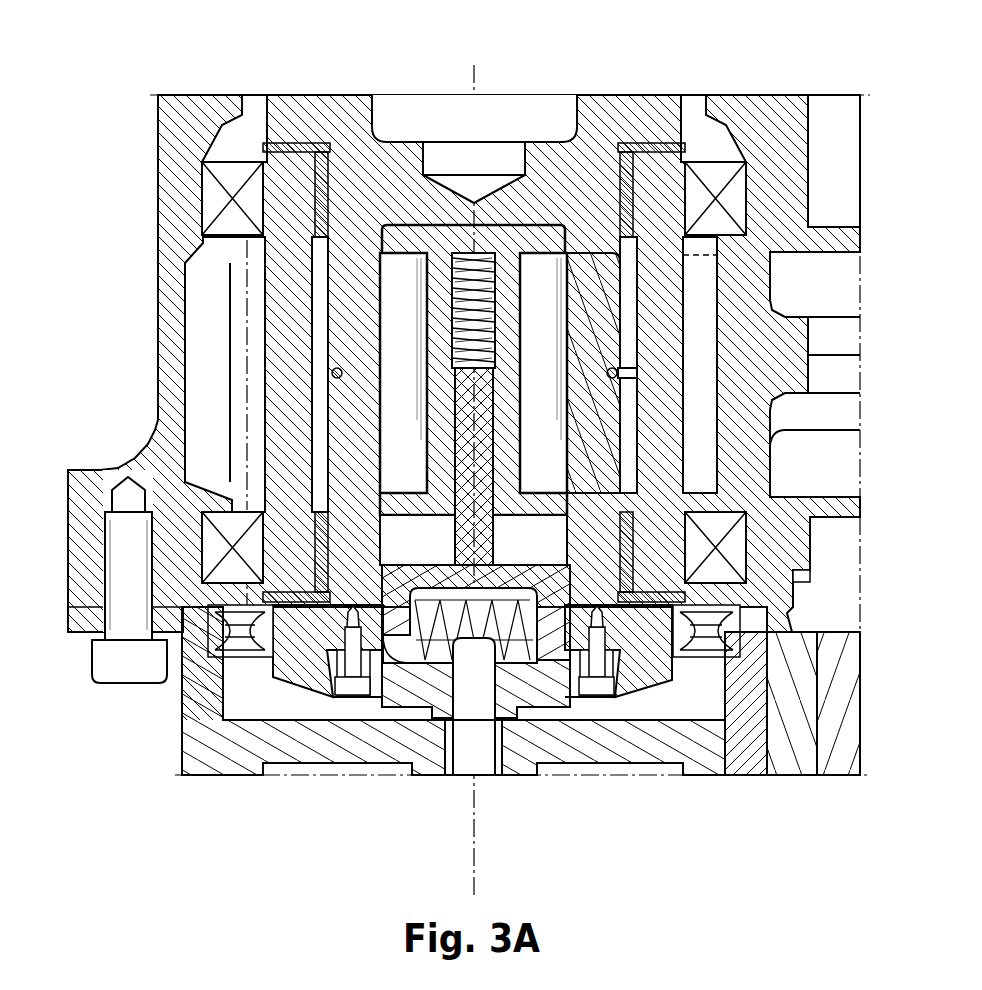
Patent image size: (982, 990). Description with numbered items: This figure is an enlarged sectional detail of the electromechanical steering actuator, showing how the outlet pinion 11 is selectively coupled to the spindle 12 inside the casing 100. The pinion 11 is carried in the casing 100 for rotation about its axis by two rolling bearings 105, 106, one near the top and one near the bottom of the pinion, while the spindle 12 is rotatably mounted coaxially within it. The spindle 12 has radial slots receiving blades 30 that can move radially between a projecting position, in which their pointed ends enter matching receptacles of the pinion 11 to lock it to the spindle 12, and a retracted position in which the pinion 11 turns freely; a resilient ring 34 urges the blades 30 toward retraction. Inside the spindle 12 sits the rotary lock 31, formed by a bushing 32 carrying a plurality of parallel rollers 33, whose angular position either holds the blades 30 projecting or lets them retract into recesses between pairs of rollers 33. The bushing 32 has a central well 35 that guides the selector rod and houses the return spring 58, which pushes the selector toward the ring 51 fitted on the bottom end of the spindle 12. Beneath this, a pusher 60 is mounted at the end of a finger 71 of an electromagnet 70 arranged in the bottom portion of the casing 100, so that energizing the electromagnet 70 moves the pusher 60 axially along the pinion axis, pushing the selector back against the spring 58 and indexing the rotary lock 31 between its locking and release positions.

The casing 100 is at (158, 326).
The spindle 12 is at (321, 112).
The outlet pinion 11 is at (238, 375).
The rolling bearing 105 is at (210, 200).
The rolling bearing 106 is at (140, 548).
The blade 30 is at (601, 267).
The rotary lock 31 is at (396, 505).
The bushing 32 is at (527, 240).
The rollers 33 is at (407, 411).
The resilient ring 34 is at (637, 327).
The central well 35 is at (478, 482).
The return spring 58 is at (470, 240).
The ring 51 is at (640, 682).
The pusher 60 is at (395, 697).
The electromagnet 70 is at (225, 740).
The finger 71 is at (487, 690).